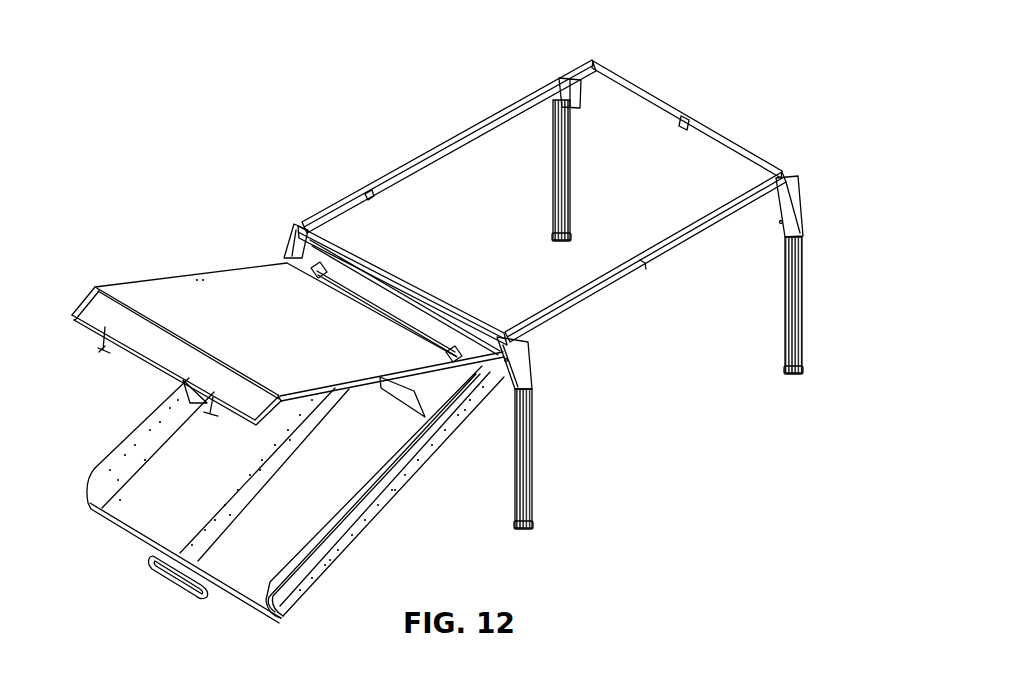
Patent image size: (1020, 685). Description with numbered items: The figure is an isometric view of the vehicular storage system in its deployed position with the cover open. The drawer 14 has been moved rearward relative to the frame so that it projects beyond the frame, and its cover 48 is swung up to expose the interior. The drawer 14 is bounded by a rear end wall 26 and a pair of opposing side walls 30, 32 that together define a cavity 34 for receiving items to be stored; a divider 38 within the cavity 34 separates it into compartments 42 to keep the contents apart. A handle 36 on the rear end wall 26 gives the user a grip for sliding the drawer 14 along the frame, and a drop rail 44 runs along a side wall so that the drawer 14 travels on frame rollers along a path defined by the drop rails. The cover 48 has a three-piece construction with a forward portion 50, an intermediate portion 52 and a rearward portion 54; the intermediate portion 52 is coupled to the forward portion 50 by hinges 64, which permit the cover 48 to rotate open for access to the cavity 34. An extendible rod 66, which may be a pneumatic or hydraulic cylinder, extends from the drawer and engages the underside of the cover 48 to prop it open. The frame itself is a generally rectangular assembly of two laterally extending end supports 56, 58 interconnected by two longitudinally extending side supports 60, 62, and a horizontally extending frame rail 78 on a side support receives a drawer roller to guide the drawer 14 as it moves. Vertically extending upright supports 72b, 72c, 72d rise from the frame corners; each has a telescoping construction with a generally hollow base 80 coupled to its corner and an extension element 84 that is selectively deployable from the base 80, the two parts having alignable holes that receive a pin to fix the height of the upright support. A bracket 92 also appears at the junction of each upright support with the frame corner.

The side support 62 is at (453, 145).
The end support 58 is at (651, 92).
The side support 60 is at (637, 272).
The end support 56 is at (323, 223).
The frame rail 78 is at (420, 178).
The forward portion 50 is at (284, 247).
The hinge 64 is at (450, 357).
The cover 48 is at (237, 290).
The intermediate portion 52 is at (175, 297).
The rearward portion 54 is at (92, 300).
The drawer 14 is at (420, 493).
The rear end wall 26 is at (97, 517).
The side wall 32 is at (130, 430).
The cavity 34 is at (163, 515).
The handle 36 is at (185, 588).
The divider 38 is at (272, 477).
The side wall 30 is at (363, 530).
The drop rail 44 is at (427, 457).
The compartment 42 is at (132, 505).
The extendible rod 66 is at (400, 407).
The leg bracket 92 is at (588, 97).
The upright support 72d is at (567, 193).
The upright support 72c is at (803, 285).
The upright support 72b is at (533, 437).
The hollow base 80 is at (567, 225).
The extension element 84 is at (556, 238).